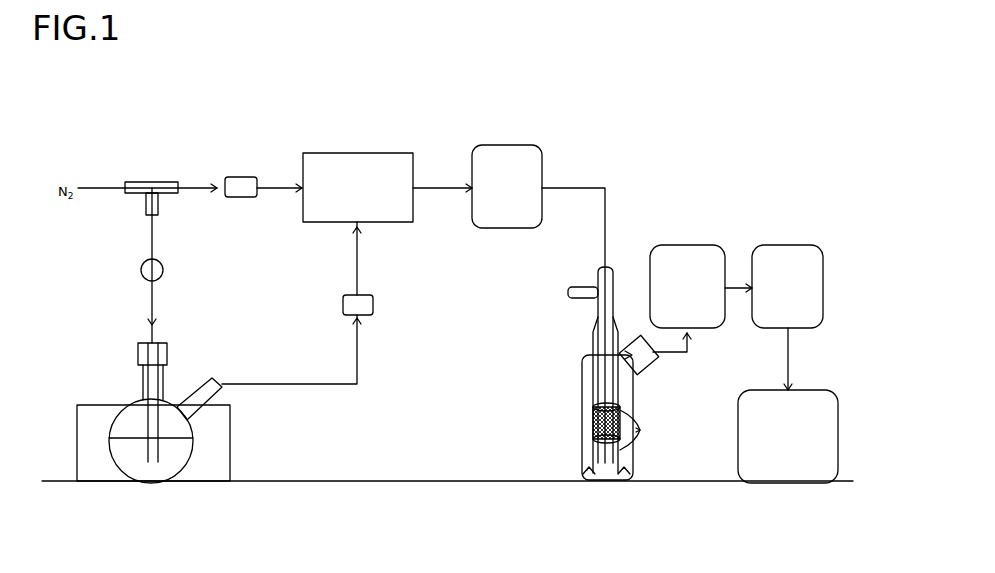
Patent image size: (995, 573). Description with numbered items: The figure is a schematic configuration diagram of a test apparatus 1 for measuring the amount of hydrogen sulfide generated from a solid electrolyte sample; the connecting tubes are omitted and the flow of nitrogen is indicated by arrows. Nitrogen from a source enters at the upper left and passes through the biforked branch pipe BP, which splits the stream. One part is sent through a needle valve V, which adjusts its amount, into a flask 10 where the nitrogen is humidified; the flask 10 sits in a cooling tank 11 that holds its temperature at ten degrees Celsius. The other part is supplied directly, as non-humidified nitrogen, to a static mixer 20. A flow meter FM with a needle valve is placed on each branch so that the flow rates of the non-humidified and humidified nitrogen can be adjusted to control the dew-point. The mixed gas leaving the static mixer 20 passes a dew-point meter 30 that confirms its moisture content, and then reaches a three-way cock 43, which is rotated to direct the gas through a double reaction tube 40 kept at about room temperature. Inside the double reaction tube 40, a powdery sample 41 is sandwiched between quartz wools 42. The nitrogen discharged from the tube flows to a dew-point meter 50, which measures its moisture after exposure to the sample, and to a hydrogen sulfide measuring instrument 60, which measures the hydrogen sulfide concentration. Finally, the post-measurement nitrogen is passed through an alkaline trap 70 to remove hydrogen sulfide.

The test apparatus 1 is at (625, 142).
The flask 10 is at (167, 422).
The cooling tank 11 is at (215, 452).
The static mixer 20 is at (368, 207).
The dew-point meter 30 is at (503, 218).
The double reaction tube 40 is at (600, 383).
The powdery sample 41 is at (595, 430).
The quartz wools 42 is at (644, 430).
The three-way cock 43 is at (605, 270).
The dew-point meter 50 is at (675, 258).
The hydrogen sulfide measuring instrument 60 is at (780, 258).
The alkaline trap 70 is at (795, 397).
The biforked branch pipe BP is at (152, 184).
The needle valve V is at (158, 276).
The flow meter FM is at (238, 197).